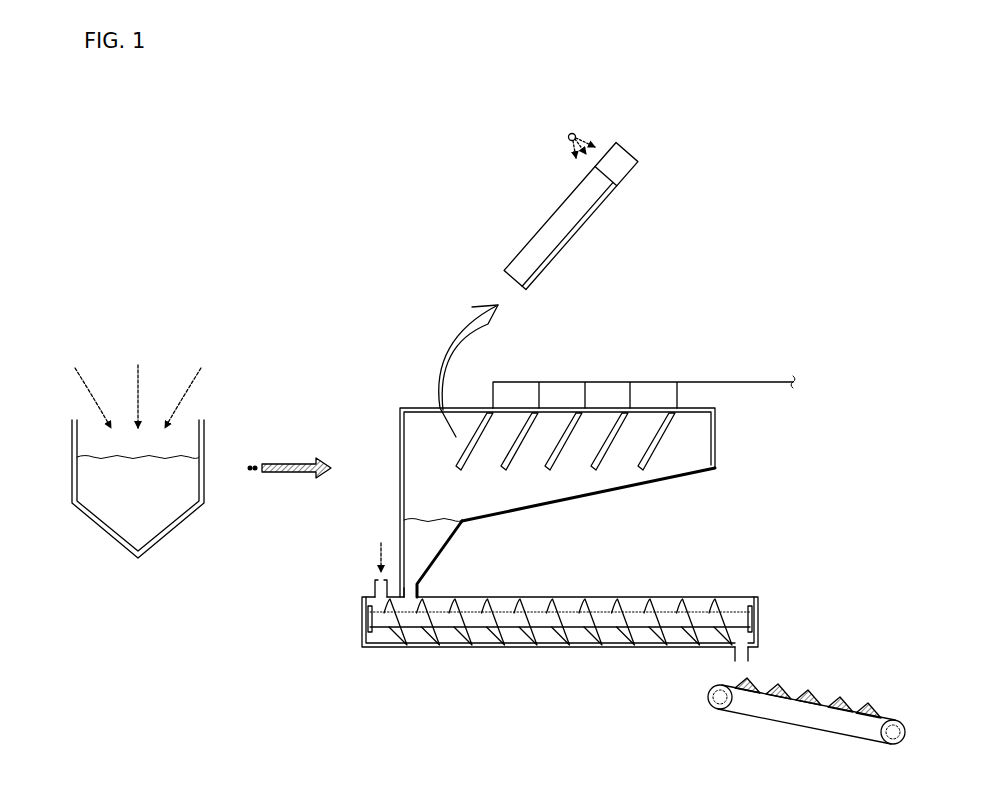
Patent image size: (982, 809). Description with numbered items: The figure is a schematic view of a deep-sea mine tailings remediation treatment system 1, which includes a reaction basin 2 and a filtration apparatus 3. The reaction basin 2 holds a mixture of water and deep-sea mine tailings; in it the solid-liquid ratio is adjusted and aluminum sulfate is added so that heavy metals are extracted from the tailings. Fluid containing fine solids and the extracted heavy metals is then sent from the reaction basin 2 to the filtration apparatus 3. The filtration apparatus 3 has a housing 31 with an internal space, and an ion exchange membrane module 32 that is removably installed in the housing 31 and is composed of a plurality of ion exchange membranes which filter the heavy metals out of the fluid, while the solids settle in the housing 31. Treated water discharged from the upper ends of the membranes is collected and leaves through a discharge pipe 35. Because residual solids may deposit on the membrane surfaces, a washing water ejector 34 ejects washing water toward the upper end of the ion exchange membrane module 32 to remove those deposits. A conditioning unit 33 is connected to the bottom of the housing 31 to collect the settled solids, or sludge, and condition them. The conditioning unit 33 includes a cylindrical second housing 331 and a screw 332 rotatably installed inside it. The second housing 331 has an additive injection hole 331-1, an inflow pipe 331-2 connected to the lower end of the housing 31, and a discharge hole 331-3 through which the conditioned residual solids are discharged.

The deep-sea mine tailings remediation treatment system 1 is at (61, 248).
The reaction basin 2 is at (66, 443).
The filtration apparatus 3 is at (364, 421).
The housing 31 is at (688, 474).
The ion exchange membrane module 32 is at (598, 215).
The conditioning unit 33 is at (600, 595).
The second housing 331 is at (487, 649).
The additive injection hole 331-1 is at (374, 584).
The inflow pipe 331-2 is at (421, 586).
The discharge hole 331-3 is at (752, 658).
The screw 332 is at (656, 598).
The washing water ejector 34 is at (476, 410).
The discharge pipe 35 is at (612, 382).